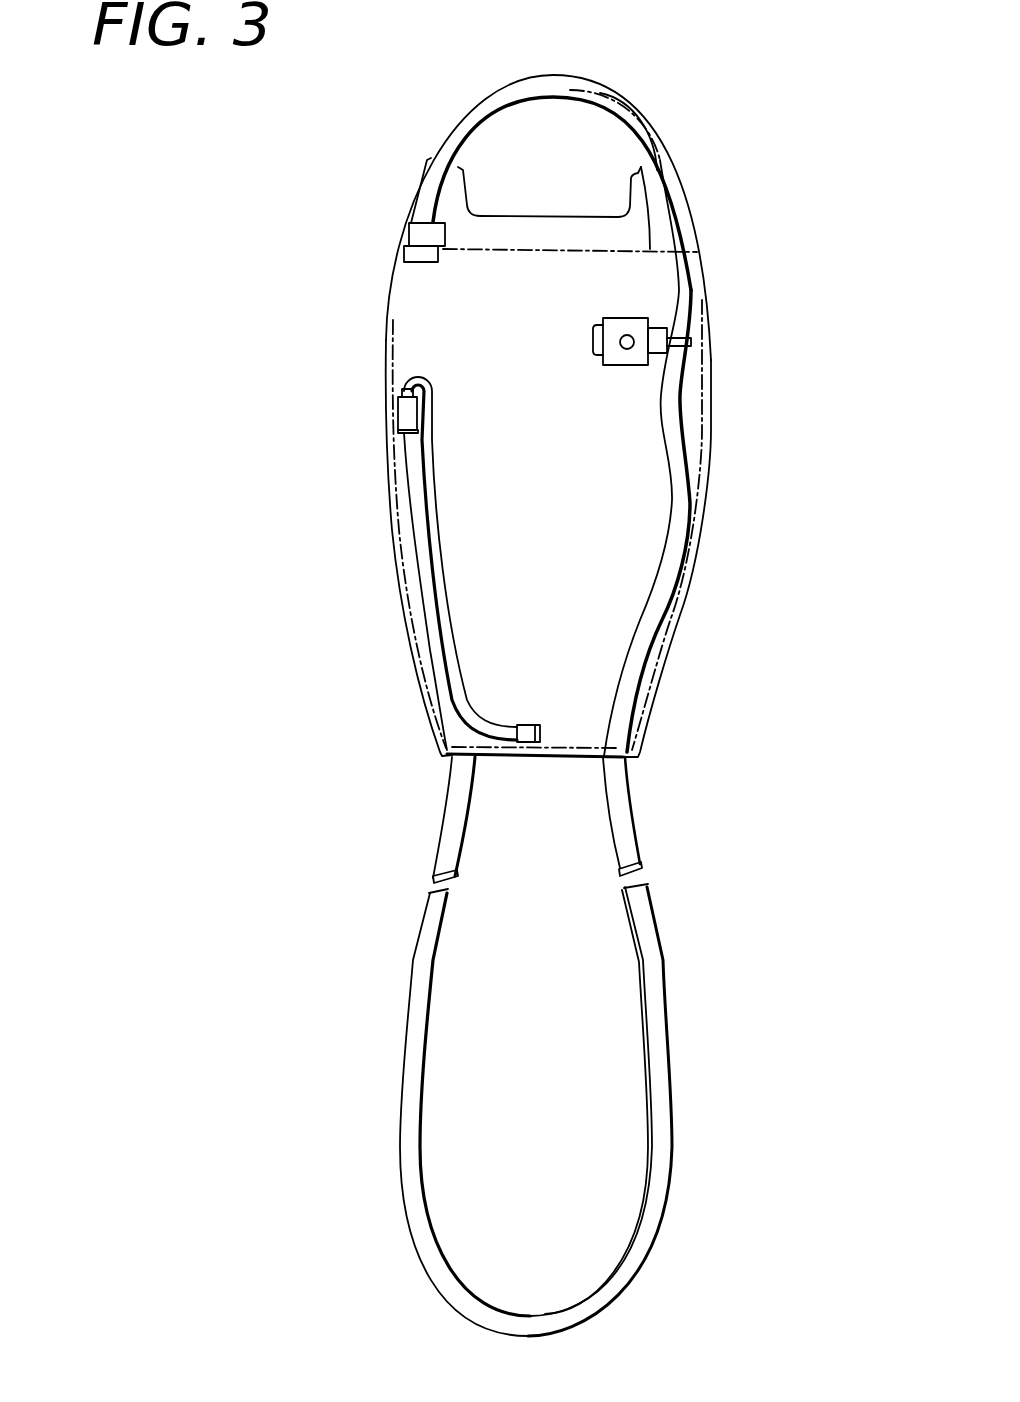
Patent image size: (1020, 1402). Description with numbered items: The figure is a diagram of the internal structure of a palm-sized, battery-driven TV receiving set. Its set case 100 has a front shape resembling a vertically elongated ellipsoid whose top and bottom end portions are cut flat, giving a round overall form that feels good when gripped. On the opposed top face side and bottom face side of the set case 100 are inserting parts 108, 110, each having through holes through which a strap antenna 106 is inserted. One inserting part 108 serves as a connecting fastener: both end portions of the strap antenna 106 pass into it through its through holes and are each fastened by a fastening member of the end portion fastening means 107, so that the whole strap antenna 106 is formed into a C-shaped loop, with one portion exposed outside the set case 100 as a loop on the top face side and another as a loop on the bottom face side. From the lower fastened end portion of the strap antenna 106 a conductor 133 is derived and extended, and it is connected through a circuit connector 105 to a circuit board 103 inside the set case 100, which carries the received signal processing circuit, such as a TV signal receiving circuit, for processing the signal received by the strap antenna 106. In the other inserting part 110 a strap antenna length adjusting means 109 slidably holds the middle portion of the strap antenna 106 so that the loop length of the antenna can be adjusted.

The set case 100 is at (383, 317).
The circuit board 103 is at (587, 249).
The circuit connector 105 is at (530, 725).
The strap antenna 106 is at (467, 110).
The end portion fastening means 107 is at (417, 240).
The inserting part 108 is at (440, 467).
The strap antenna length adjusting means 109 is at (633, 316).
The inserting part 110 is at (655, 486).
The conductor 133 is at (438, 562).